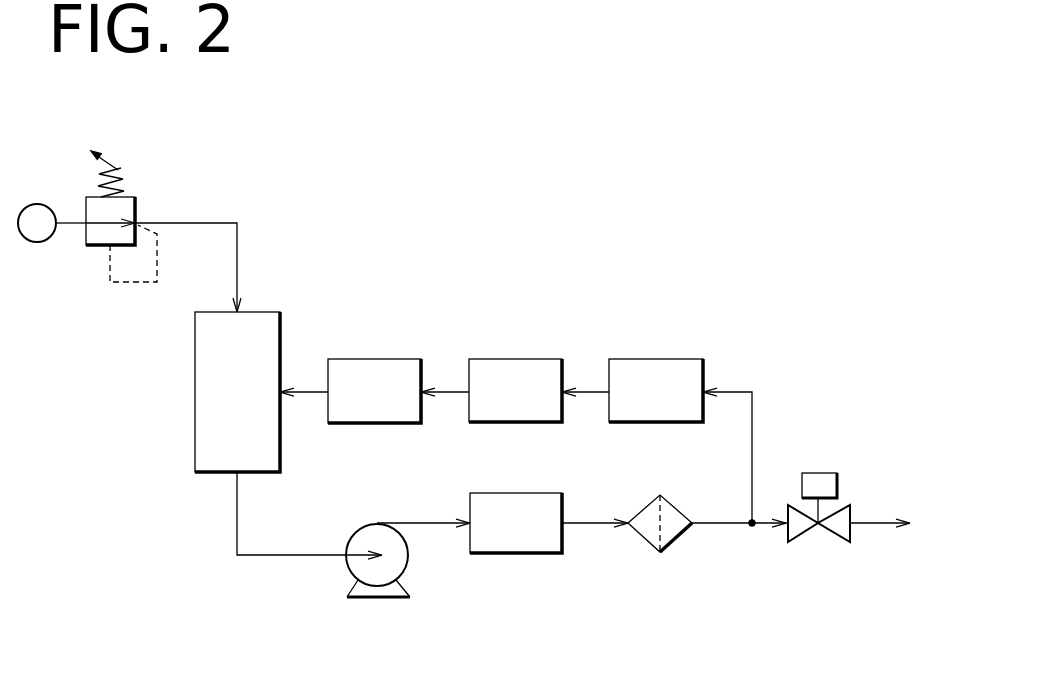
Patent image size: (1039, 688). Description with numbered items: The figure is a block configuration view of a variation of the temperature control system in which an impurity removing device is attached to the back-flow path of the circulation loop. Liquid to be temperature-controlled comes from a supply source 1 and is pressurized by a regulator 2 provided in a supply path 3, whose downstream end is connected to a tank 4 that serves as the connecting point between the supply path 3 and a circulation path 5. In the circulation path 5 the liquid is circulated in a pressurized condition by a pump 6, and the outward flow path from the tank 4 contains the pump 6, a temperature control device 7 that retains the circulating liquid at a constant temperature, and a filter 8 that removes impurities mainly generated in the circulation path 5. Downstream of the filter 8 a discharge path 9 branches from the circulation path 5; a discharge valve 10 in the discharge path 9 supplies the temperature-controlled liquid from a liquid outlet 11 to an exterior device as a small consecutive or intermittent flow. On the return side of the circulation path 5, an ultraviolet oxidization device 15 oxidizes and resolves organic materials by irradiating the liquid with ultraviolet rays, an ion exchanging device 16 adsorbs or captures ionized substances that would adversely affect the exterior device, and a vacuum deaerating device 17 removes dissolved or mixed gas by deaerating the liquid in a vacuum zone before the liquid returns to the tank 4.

The supply source 1 is at (35, 207).
The regulator 2 is at (131, 203).
The supply path 3 is at (207, 220).
The tank 4 is at (273, 333).
The circulation path 5 is at (752, 441).
The pump 6 is at (383, 593).
The temperature control device 7 is at (525, 545).
The filter 8 is at (657, 543).
The discharge path 9 is at (765, 527).
The discharge valve 10 is at (835, 533).
The liquid outlet 11 is at (875, 525).
The ultraviolet oxidization device 15 is at (650, 367).
The ion exchanging device 16 is at (515, 367).
The vacuum deaerating device 17 is at (373, 367).